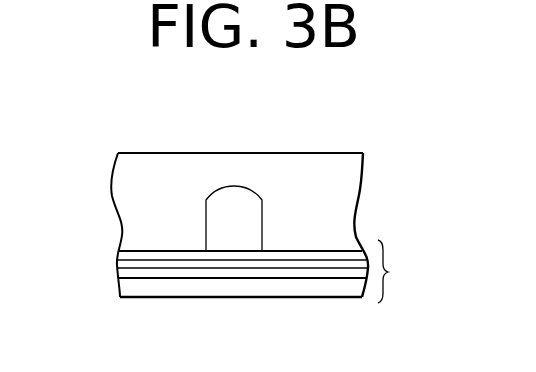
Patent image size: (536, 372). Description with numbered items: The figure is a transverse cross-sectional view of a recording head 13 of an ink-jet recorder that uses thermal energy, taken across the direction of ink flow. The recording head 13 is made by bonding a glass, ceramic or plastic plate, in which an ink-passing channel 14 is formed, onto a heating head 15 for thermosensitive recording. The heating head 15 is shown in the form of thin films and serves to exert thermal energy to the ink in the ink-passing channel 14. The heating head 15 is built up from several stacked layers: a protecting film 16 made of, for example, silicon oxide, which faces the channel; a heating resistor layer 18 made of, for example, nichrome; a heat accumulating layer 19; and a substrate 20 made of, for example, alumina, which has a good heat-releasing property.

The recording head 13 is at (156, 153).
The ink-passing channel 14 is at (255, 185).
The heating head 15 is at (402, 271).
The protecting film 16 is at (328, 254).
The heating resistor layer 18 is at (343, 265).
The heat accumulating layer 19 is at (341, 272).
The substrate 20 is at (297, 283).